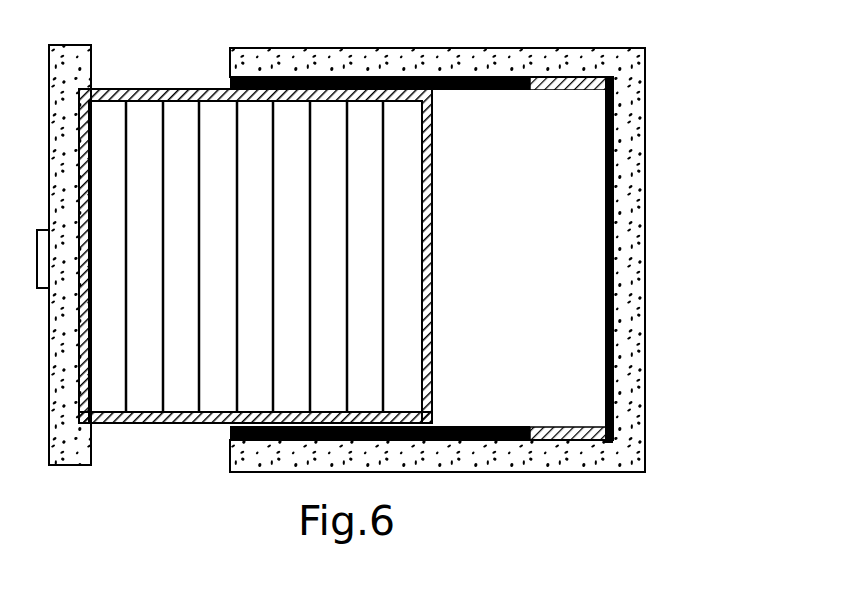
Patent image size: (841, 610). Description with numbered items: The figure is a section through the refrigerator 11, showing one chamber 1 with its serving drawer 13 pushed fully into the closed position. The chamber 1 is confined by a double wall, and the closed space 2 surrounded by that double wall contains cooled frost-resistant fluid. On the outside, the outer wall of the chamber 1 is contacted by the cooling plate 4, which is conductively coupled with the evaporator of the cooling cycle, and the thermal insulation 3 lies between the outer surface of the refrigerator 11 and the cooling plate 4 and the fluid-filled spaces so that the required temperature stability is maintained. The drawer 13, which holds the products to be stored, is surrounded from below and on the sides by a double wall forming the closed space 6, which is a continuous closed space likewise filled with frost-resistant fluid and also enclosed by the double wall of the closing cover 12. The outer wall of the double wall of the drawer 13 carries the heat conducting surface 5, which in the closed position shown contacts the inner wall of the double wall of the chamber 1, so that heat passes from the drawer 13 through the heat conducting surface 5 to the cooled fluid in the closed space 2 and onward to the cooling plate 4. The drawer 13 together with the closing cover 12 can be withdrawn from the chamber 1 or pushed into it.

The chamber 1 is at (574, 398).
The closed space 2 is at (580, 80).
The thermal insulation 3 is at (425, 76).
The cooling plate 4 is at (320, 77).
The heat conducting surface 5 is at (73, 91).
The closed space 6 is at (423, 322).
The refrigerator 11 is at (524, 50).
The closing cover 12 is at (48, 150).
The serving drawer 13 is at (178, 395).